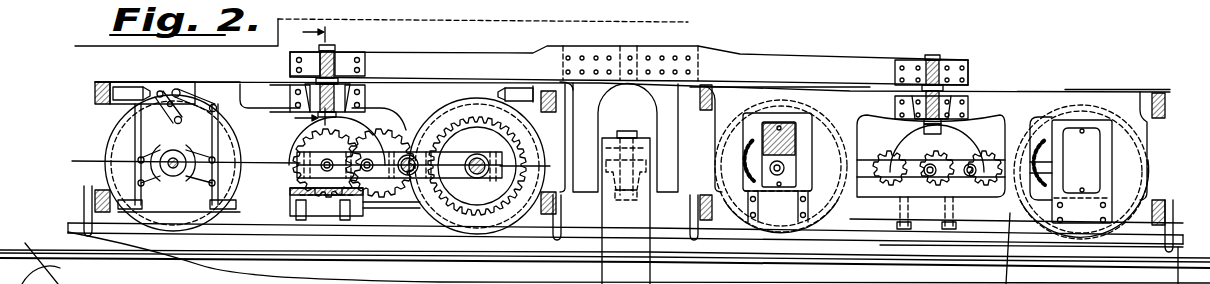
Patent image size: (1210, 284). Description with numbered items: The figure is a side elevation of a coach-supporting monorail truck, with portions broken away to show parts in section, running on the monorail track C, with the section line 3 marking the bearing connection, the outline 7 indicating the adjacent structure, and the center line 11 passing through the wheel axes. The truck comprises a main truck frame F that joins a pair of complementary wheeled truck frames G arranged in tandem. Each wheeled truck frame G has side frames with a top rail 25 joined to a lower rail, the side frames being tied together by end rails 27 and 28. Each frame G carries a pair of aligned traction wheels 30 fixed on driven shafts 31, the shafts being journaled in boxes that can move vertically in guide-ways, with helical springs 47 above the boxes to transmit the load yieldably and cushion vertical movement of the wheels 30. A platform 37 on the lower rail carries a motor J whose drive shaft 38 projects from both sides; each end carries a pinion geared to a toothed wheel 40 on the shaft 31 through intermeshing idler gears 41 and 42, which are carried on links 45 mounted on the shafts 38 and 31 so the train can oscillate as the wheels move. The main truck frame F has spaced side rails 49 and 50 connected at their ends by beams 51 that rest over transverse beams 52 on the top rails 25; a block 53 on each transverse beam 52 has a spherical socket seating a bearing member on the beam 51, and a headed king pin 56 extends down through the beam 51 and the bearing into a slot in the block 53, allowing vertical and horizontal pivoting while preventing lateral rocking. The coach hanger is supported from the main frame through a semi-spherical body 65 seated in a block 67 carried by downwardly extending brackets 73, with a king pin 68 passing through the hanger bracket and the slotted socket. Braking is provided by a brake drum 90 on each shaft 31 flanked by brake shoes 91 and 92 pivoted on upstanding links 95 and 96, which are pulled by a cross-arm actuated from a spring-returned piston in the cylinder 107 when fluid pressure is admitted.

The section line 3 is at (298, 78).
The car body outline 7 is at (375, 37).
The axle center line 11 is at (68, 171).
The top rail 25 is at (262, 88).
The end rail 27 is at (95, 93).
The end rail 28 is at (92, 201).
The traction wheel 30 is at (118, 135).
The driven shaft 31 is at (176, 158).
The platform 37 is at (340, 205).
The drive shaft 38 is at (327, 159).
The toothed wheel 40 is at (456, 120).
The idler gear 41 is at (366, 147).
The idler gear 42 is at (407, 152).
The link 45 is at (460, 178).
The helical spring 47 is at (792, 130).
The side rail 49 is at (445, 60).
The side rail 50 is at (777, 62).
The end beam 51 is at (337, 60).
The transverse beam 52 is at (349, 88).
The block 53 is at (352, 98).
The king pin 56 is at (328, 46).
The semi-spherical body 65 is at (640, 172).
The block 67 is at (650, 190).
The king pin 68 is at (627, 136).
The bracket 73 is at (660, 97).
The brake drum 90 is at (173, 178).
The brake shoe 91 is at (150, 172).
The brake shoe 92 is at (205, 172).
The upstanding link 95 is at (146, 147).
The upstanding link 96 is at (210, 147).
The cylinder 107 is at (122, 88).
The monorail track C is at (68, 232).
The main truck frame F is at (866, 60).
The wheeled truck frame G is at (228, 82).
The motor J is at (395, 146).